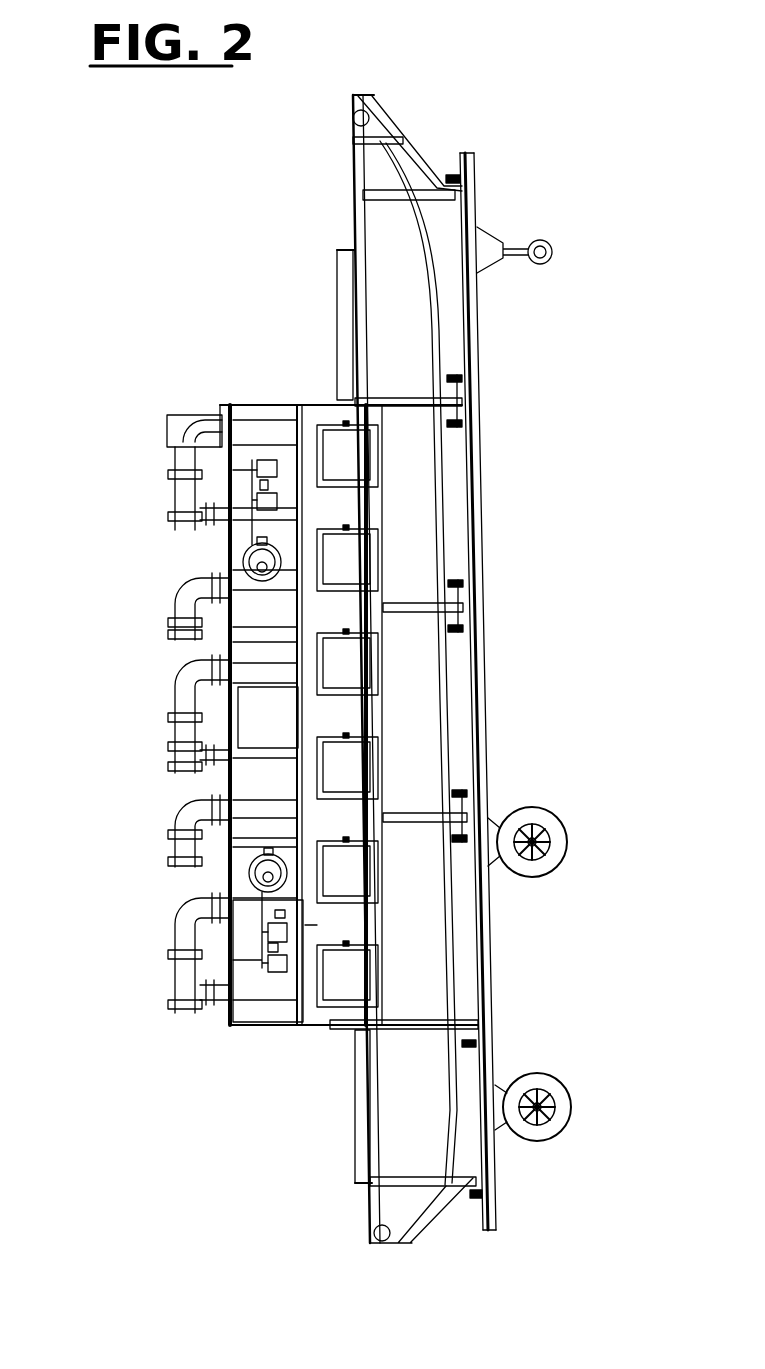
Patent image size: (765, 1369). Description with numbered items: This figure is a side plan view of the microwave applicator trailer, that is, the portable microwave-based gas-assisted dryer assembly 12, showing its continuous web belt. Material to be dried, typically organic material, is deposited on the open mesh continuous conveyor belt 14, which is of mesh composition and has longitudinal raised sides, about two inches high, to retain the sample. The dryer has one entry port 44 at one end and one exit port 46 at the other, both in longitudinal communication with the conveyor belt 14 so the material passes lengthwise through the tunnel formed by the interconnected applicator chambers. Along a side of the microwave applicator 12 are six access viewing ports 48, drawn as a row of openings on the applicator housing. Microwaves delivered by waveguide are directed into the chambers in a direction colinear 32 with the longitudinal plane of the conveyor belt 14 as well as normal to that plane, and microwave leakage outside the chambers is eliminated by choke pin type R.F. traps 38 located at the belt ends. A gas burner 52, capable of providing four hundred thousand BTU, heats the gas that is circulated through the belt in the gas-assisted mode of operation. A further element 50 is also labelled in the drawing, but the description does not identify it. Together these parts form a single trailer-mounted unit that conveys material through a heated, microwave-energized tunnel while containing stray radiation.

The portable microwave-based gas-assisted dryer assembly 12 is at (270, 697).
The open mesh continuous conveyor belt 14 is at (355, 140).
The colinear direction 32 is at (329, 924).
The R.F. traps 38 is at (338, 327).
The entry port 44 is at (336, 243).
The exit port 46 is at (356, 1192).
The access viewing ports 48 is at (370, 455).
The control box 50 is at (272, 972).
The gas burner 52 is at (250, 874).